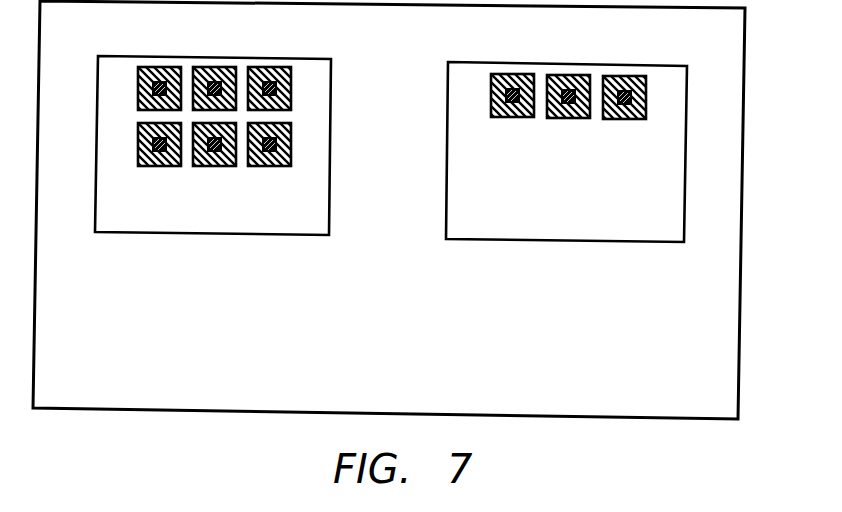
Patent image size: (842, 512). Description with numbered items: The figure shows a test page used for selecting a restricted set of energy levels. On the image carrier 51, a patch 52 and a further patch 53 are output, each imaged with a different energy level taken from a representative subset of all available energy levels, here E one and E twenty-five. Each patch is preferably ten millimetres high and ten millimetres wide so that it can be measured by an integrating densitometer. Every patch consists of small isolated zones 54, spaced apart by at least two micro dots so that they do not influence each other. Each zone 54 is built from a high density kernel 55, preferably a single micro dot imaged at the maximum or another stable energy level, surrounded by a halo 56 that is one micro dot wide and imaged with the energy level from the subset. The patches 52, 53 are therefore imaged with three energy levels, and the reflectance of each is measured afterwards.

The image carrier 51 is at (410, 413).
The patch 52 is at (268, 234).
The patch 53 is at (565, 241).
The zone 54 is at (640, 119).
The high density kernel 55 is at (494, 106).
The halo 56 is at (588, 118).